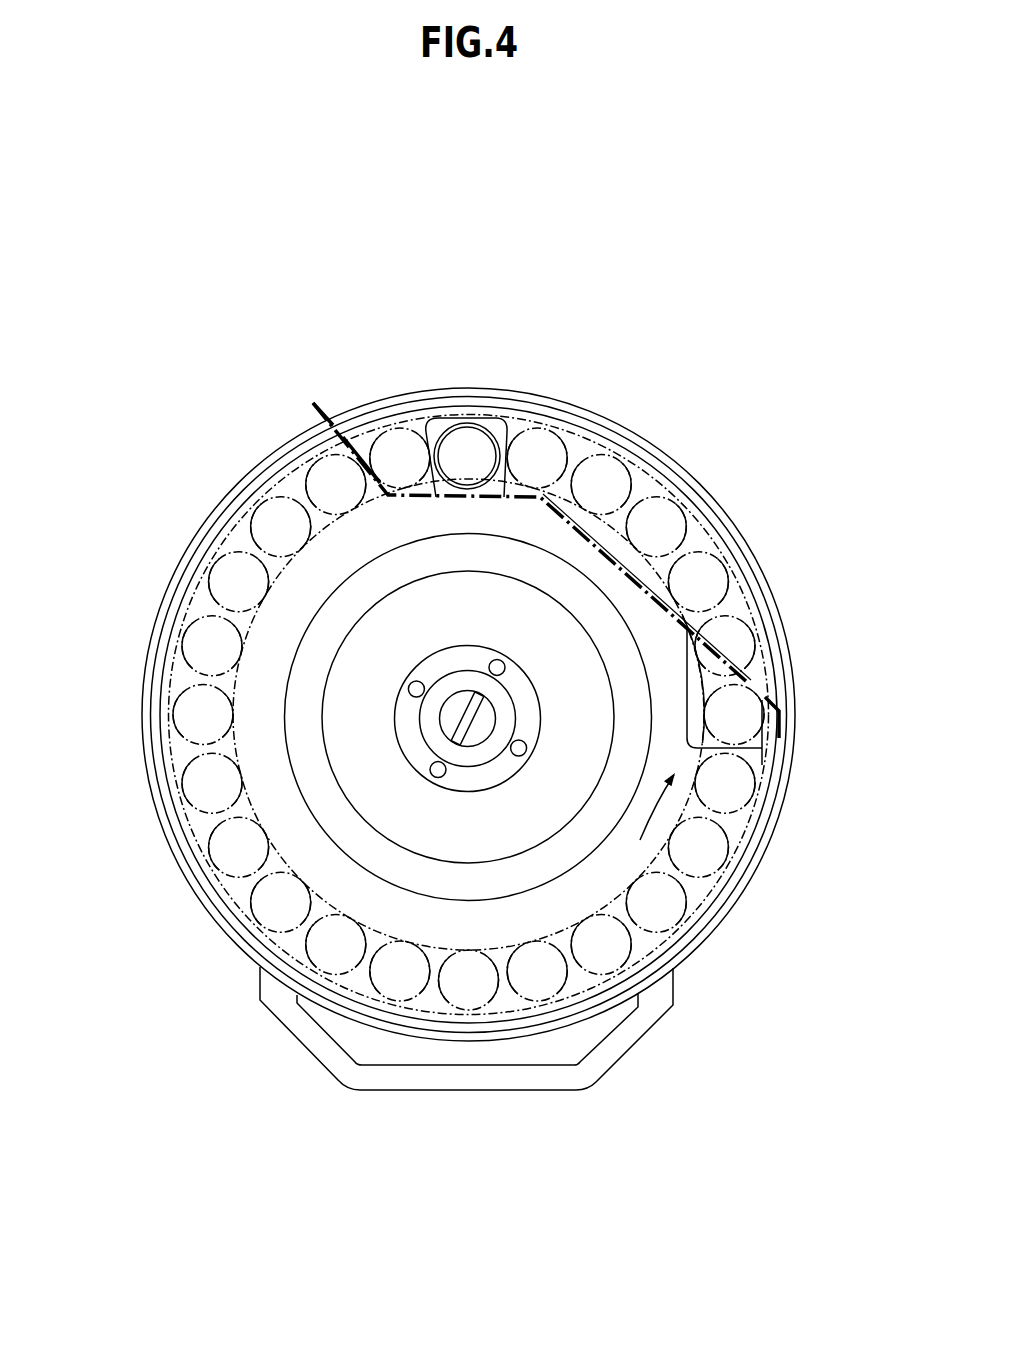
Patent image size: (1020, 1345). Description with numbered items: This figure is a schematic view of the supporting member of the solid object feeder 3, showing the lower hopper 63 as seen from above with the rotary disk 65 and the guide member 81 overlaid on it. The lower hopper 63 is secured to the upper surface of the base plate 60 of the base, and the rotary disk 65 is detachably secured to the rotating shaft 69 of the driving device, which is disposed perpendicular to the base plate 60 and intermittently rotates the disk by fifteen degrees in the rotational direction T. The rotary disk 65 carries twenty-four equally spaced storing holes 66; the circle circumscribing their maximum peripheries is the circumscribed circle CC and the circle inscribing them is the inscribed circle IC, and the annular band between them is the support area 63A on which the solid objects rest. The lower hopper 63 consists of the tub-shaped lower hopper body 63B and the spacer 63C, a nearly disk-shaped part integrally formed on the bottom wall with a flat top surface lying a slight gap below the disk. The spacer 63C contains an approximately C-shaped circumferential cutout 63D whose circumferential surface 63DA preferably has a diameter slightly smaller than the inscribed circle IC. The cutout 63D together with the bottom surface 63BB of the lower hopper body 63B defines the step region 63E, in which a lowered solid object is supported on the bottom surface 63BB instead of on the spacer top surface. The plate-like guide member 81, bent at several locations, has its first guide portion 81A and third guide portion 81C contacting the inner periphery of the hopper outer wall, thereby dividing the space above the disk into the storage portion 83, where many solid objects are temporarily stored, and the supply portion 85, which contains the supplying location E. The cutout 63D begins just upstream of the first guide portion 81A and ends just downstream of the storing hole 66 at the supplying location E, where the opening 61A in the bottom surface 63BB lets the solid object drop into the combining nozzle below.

The solid object feeder 3 is at (450, 626).
The third guide portion 81C is at (364, 445).
The supplying location E is at (438, 312).
The opening 61A is at (483, 458).
The bottom surface 63BB is at (574, 458).
The supply portion 85 is at (491, 610).
The circumferential surface 63DA is at (600, 547).
The cutout 63D is at (775, 482).
The guide member 81 is at (592, 543).
The first guide portion 81A is at (820, 618).
The step region 63E is at (793, 624).
The storage portion 83 is at (417, 706).
The rotary disk 65 is at (767, 737).
The storing hole 66 is at (723, 808).
The spacer 63C is at (727, 828).
The support area 63A is at (759, 950).
The lower hopper body 63B is at (688, 950).
The base plate 60 is at (548, 1077).
The rotating shaft 69 is at (478, 728).
The circumscribed circle CC is at (228, 737).
The inscribed circle IC is at (275, 858).
The lower hopper 63 is at (419, 797).
The rotational direction T is at (645, 817).